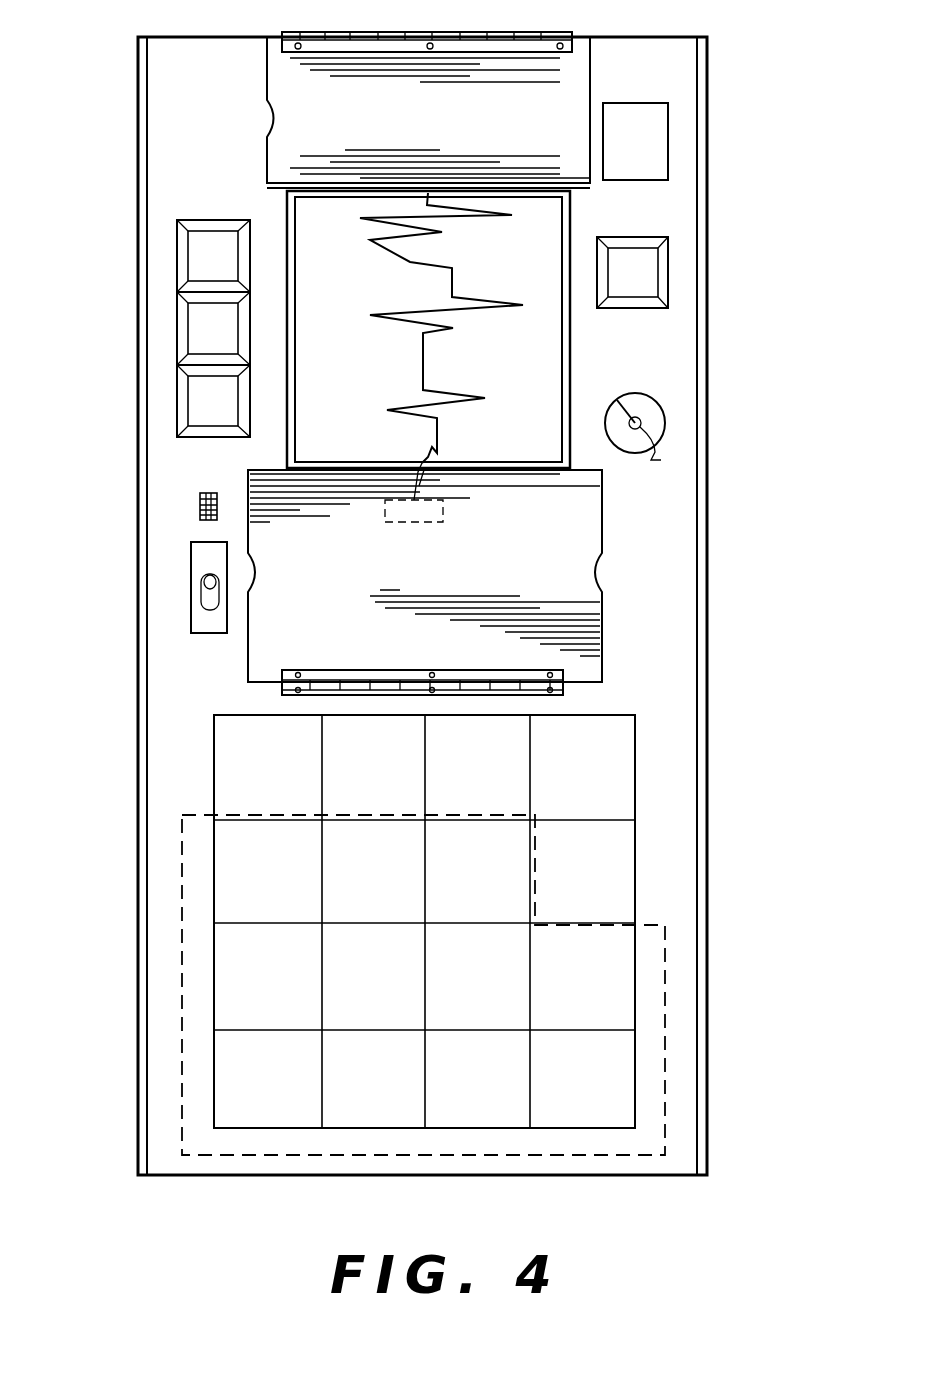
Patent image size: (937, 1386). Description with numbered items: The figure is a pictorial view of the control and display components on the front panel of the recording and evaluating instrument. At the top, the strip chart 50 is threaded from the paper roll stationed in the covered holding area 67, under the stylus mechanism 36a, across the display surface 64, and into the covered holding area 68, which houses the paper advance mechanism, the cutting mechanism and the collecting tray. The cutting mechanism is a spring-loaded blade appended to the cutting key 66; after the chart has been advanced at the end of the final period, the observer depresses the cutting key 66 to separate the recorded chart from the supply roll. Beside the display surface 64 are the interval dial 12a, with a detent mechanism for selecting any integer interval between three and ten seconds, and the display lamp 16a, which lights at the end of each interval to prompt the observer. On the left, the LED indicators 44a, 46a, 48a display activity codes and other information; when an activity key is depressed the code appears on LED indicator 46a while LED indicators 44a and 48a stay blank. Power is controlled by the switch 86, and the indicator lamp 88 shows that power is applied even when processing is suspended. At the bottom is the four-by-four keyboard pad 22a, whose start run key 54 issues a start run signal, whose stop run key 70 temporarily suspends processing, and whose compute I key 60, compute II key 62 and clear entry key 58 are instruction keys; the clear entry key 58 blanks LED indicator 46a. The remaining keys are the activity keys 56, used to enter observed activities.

The covered holding area 68 is at (445, 114).
The cutting key 66 is at (670, 129).
The display surface 64 is at (287, 198).
The strip chart 50 is at (358, 266).
The stylus mechanism 36a is at (420, 458).
The display lamp 16a is at (681, 220).
The LED indicator 44a is at (177, 232).
The LED indicator 46a is at (177, 298).
The LED indicator 48a is at (177, 370).
The interval dial 12a is at (676, 492).
The indicator lamp 88 is at (200, 503).
The switch 86 is at (200, 584).
The covered holding area 67 is at (455, 571).
The compute I key 60 is at (480, 712).
The start run key 54 is at (225, 730).
The keyboard pad 22a is at (630, 712).
The stop run key 70 is at (330, 715).
The compute II key 62 is at (637, 786).
The clear entry key 58 is at (612, 885).
The activity keys 56 is at (182, 884).